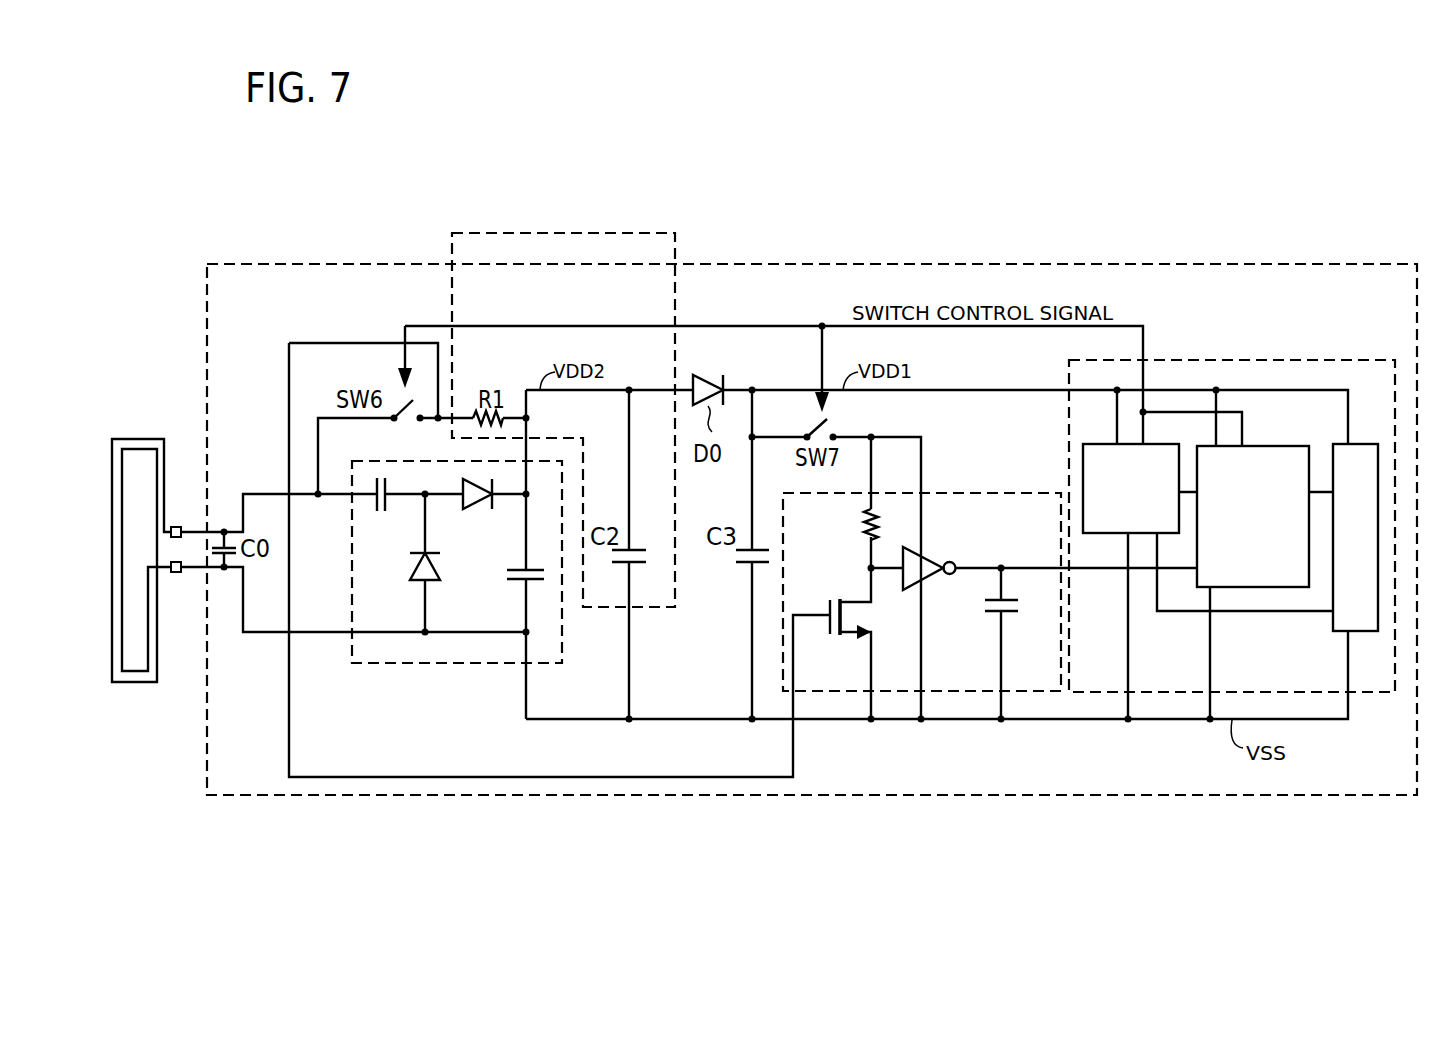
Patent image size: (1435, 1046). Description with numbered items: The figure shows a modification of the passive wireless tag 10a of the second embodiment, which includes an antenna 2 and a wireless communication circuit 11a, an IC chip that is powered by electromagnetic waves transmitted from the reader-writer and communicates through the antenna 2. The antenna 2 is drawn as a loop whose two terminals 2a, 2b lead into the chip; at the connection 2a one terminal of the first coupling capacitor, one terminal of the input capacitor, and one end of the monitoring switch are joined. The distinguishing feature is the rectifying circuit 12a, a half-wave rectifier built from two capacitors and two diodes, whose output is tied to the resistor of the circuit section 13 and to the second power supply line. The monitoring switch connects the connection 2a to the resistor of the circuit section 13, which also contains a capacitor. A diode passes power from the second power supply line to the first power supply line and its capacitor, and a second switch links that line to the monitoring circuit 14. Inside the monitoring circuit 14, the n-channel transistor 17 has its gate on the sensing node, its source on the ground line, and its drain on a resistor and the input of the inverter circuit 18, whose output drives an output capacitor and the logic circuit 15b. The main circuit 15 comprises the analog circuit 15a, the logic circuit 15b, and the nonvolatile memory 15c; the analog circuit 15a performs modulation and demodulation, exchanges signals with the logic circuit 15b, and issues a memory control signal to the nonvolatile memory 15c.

The antenna 2 is at (128, 439).
The connection 2a is at (181, 526).
The antenna terminal 2b is at (178, 573).
The wireless tag 10a is at (1351, 213).
The wireless communication circuit 11a is at (288, 264).
The rectifying circuit 12a is at (472, 664).
The circuit section 13 is at (612, 233).
The monitoring circuit 14 is at (990, 611).
The main circuit 15 is at (1233, 499).
The analog circuit 15a is at (1103, 443).
The logic circuit 15b is at (1262, 446).
The nonvolatile memory 15c is at (1370, 443).
The transistor 17 is at (852, 600).
The inverter circuit 18 is at (934, 577).